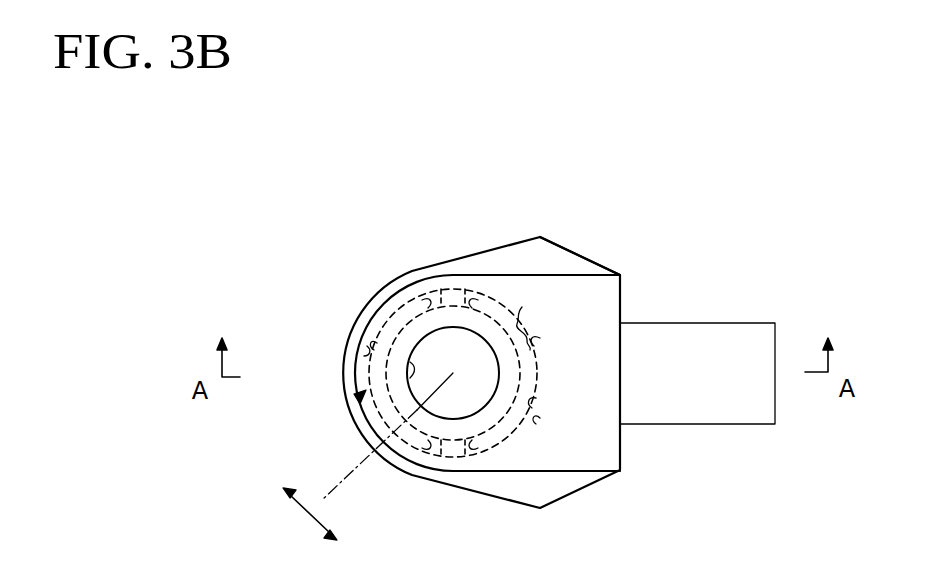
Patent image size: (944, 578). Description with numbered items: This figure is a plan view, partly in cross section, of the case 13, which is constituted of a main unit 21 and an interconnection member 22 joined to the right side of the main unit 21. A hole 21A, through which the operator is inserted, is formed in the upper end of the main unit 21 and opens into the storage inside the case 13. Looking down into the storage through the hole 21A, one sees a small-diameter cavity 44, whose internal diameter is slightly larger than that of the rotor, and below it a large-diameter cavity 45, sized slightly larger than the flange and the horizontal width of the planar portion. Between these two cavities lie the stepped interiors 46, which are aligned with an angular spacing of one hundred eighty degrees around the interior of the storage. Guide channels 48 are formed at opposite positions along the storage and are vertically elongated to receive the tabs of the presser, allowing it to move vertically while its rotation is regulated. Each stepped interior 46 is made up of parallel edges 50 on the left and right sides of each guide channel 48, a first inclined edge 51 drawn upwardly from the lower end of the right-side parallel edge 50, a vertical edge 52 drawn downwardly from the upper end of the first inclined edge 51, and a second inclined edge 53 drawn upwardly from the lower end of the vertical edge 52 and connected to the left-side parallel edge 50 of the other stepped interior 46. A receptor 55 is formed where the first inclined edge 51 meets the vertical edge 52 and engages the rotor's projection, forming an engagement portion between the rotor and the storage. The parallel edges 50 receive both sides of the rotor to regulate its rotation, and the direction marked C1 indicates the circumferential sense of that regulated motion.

The case 13 is at (643, 212).
The main unit 21 is at (537, 236).
The hole 21A is at (400, 377).
The interconnection member 22 is at (755, 330).
The small-diameter cavity 44 is at (520, 374).
The large-diameter cavity 45 is at (540, 338).
The stepped interior 46 is at (350, 405).
The guide channel 48 is at (447, 292).
The parallel edge 50 is at (428, 303).
The first inclined edge 51 is at (522, 307).
The vertical edge 52 is at (543, 403).
The second inclined edge 53 is at (395, 316).
The receptor 55 is at (540, 418).
The rotation direction C1 is at (310, 513).